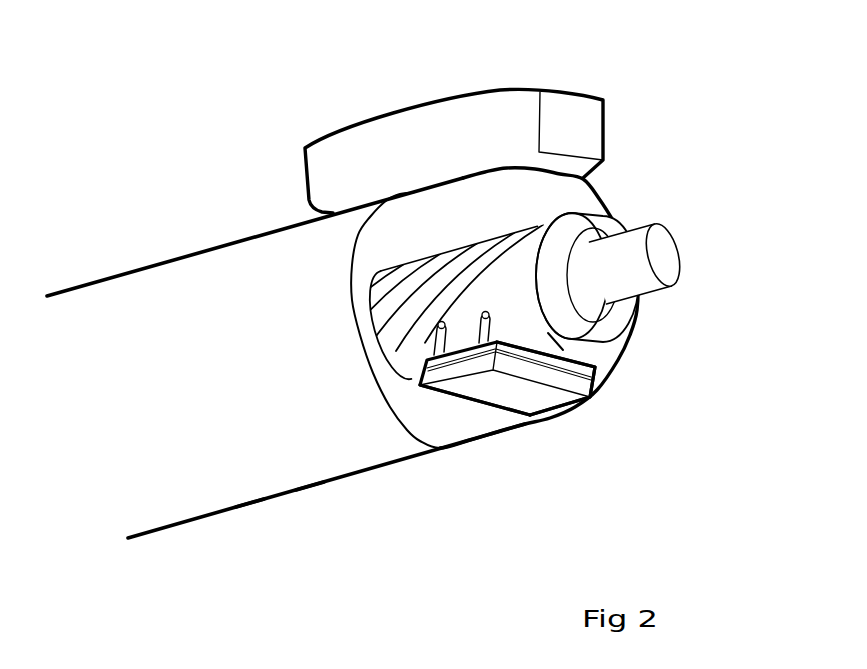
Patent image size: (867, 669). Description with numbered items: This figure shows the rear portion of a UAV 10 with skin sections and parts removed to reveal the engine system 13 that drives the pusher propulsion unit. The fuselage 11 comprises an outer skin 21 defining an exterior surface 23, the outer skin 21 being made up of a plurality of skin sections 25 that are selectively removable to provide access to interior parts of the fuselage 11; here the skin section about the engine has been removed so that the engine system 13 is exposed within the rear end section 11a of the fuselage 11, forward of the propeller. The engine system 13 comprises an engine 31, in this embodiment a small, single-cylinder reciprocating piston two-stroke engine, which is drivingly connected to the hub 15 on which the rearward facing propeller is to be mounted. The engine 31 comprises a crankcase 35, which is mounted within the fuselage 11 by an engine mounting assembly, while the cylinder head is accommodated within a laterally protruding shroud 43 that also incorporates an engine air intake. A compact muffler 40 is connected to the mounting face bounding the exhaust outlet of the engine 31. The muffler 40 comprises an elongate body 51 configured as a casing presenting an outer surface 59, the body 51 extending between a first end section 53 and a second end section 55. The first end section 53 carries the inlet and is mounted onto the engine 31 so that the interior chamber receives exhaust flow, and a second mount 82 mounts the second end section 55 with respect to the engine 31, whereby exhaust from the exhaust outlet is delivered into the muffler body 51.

The UAV 10 is at (124, 208).
The fuselage 11 is at (63, 276).
The rear end section 11a is at (460, 430).
The engine system 13 is at (530, 220).
The hub 15 is at (667, 248).
The outer skin 21 is at (138, 500).
The exterior surface 23 is at (303, 467).
The skin sections 25 is at (243, 482).
The engine 31 is at (422, 260).
The crankcase 35 is at (600, 342).
The muffler 40 is at (571, 437).
The shroud 43 is at (387, 143).
The body 51 is at (553, 397).
The first end section 53 is at (590, 381).
The second end section 55 is at (427, 413).
The outer surface 59 is at (522, 397).
The second mount 82 is at (436, 345).